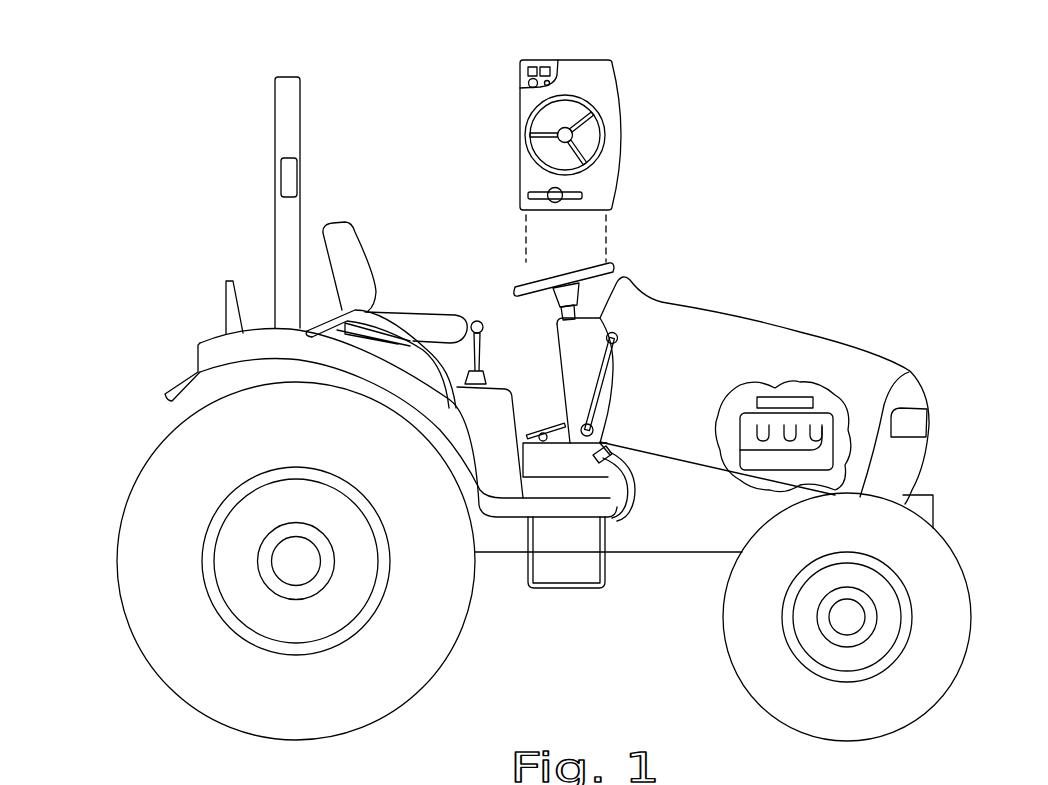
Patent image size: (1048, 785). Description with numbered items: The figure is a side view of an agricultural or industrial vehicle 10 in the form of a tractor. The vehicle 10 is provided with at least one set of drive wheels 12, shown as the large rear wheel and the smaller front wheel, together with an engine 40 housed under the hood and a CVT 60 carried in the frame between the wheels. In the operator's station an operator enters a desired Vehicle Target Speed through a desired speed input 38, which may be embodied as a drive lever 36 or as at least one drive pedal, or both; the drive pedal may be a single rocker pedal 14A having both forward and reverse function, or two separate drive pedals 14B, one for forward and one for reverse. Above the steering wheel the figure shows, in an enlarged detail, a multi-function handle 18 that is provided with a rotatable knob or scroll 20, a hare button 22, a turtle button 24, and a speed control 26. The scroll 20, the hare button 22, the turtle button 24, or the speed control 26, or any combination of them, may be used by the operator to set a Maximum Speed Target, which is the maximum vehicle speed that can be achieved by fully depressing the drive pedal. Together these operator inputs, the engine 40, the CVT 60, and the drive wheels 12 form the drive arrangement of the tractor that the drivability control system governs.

The agricultural or industrial vehicle 10 is at (543, 378).
The drive wheels 12 is at (142, 640).
The single rocker pedal 14A is at (543, 433).
The separate drive pedals 14B is at (600, 442).
The multi-function handle 18 is at (557, 138).
The rotatable knob or scroll 20 is at (522, 88).
The hare button 22 is at (547, 62).
The turtle button 24 is at (528, 62).
The speed control 26 is at (555, 82).
The drive lever 36 is at (600, 370).
The desired speed input 38 is at (612, 455).
The engine 40 is at (820, 420).
The CVT 60 is at (632, 553).